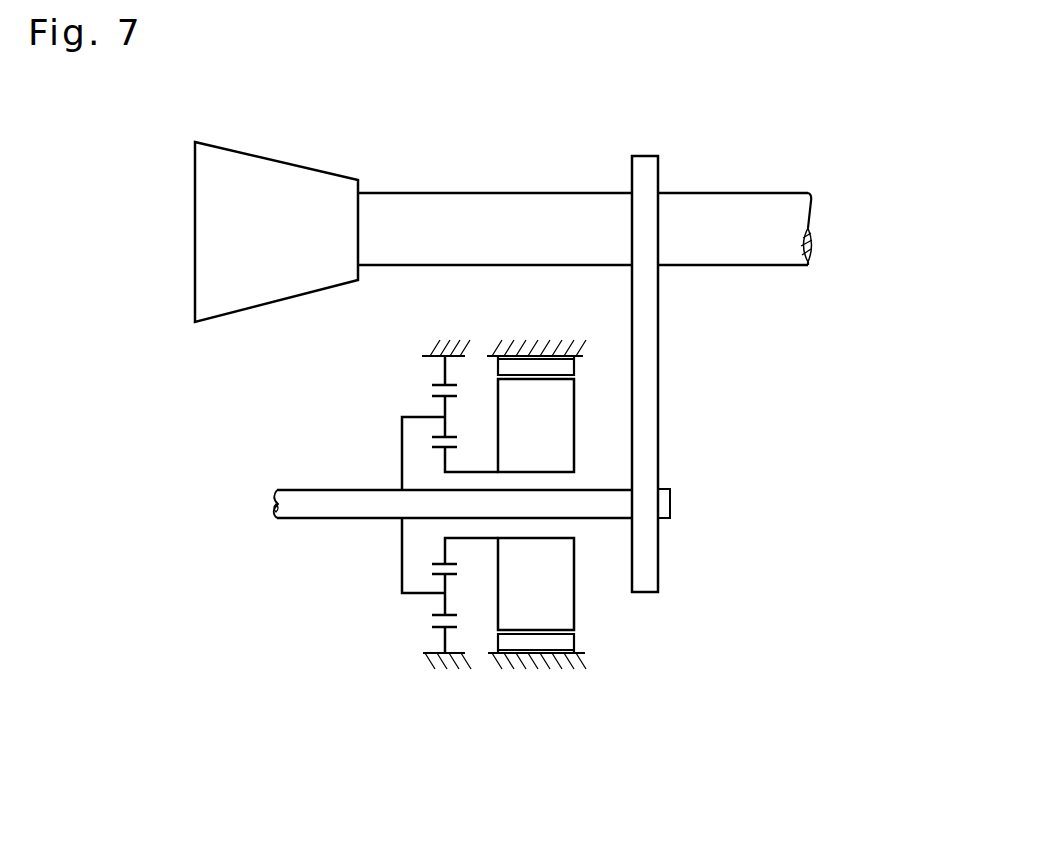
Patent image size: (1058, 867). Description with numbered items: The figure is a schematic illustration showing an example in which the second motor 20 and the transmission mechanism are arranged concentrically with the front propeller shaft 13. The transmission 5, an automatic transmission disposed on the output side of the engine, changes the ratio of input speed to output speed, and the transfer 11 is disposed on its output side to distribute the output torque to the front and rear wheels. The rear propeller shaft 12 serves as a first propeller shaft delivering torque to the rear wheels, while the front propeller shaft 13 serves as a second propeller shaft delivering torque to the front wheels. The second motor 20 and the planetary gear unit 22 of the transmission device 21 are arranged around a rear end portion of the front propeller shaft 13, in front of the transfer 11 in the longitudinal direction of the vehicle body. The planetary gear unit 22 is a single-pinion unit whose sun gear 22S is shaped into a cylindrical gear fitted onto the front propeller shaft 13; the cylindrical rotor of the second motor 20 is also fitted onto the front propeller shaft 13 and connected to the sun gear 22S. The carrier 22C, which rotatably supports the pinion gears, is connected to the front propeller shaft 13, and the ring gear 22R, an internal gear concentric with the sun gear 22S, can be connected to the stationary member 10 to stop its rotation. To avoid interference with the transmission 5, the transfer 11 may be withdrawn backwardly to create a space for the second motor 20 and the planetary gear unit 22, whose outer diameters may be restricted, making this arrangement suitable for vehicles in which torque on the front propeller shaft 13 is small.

The transmission 5 is at (298, 172).
The rear propeller shaft 12 is at (737, 200).
The transfer 11 is at (648, 360).
The front propeller shaft 13 is at (312, 497).
The stationary member 10 is at (543, 350).
The second motor 20 is at (600, 437).
The transmission device 21 is at (372, 650).
The planetary gear unit 22 is at (407, 553).
The sun gear 22S is at (440, 448).
The carrier 22C is at (402, 585).
The ring gear 22R is at (452, 627).